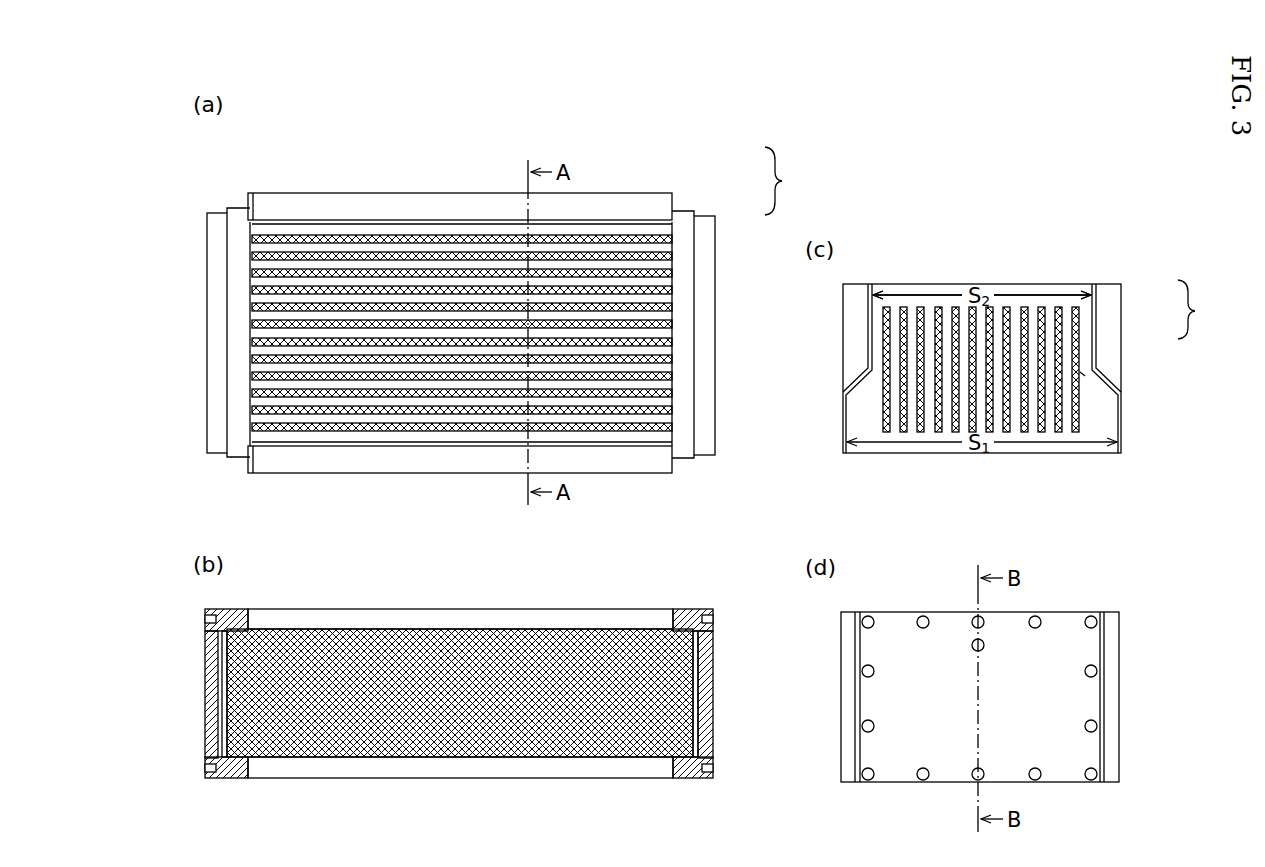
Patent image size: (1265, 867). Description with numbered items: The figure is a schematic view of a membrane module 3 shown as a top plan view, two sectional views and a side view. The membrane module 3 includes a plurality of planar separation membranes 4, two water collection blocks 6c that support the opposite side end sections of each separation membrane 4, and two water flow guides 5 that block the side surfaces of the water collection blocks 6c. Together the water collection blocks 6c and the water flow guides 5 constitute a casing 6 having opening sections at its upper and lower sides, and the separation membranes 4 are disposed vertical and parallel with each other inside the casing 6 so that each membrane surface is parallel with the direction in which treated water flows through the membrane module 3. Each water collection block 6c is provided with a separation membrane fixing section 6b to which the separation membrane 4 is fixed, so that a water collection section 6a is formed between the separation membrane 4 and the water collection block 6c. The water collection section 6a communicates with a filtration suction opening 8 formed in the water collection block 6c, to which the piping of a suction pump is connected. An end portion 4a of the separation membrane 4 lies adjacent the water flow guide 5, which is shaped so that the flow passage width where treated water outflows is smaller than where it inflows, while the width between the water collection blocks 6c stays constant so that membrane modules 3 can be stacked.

The membrane module 3 is at (632, 485).
The separation membrane 4 is at (590, 240).
The end portion of heat exchange element 4a is at (1085, 374).
The water flow guide 5 is at (655, 193).
The casing 6 is at (987, 243).
The water collection section 6a is at (222, 737).
The separation membrane fixing section 6b is at (686, 612).
The water collection block 6c is at (207, 253).
The filtration suction opening 8 is at (210, 640).